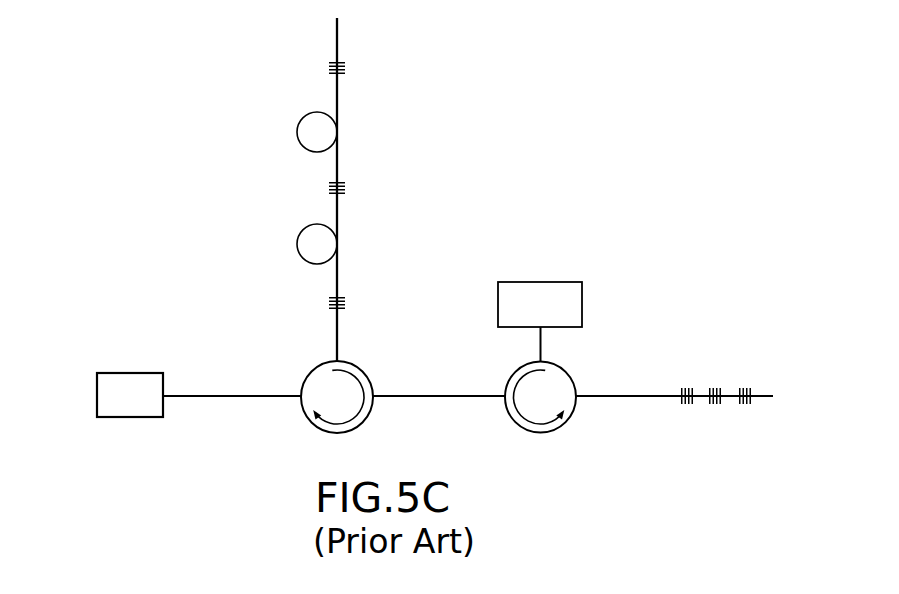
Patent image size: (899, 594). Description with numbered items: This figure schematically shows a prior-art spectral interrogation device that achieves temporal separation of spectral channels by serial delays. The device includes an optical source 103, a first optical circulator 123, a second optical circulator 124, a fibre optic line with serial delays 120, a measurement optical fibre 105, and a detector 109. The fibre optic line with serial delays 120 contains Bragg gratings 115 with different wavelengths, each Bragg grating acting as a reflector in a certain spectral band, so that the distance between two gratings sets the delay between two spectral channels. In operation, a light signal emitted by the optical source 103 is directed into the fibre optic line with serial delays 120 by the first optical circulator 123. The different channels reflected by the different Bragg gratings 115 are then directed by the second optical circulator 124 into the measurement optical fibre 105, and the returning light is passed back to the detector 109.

The optical source 103 is at (100, 402).
The measurement optical fibre 105 is at (631, 399).
The detector 109 is at (575, 302).
The Bragg gratings 115 is at (716, 406).
The fibre optic line with serial delays 120 is at (338, 33).
The first optical circulator 123 is at (306, 403).
The second optical circulator 124 is at (508, 401).